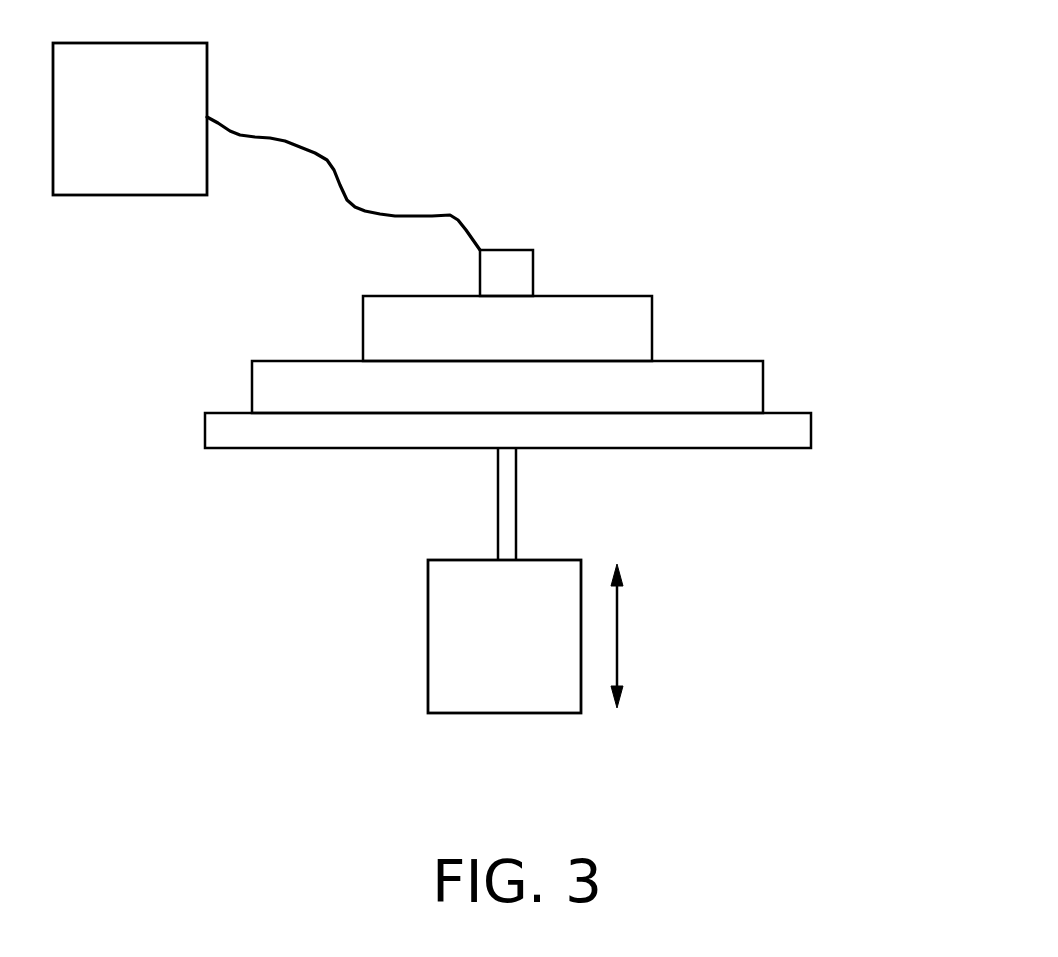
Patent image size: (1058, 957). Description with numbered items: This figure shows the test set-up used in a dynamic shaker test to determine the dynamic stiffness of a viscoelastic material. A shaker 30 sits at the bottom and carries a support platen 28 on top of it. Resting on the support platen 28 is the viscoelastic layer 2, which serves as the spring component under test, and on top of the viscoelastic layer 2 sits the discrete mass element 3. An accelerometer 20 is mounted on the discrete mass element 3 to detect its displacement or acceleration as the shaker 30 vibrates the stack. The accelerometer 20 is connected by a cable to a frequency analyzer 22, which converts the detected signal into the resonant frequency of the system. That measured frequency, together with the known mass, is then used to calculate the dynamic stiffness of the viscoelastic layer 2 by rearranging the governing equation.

The frequency analyzer 22 is at (145, 144).
The accelerometer 20 is at (525, 245).
The discrete mass element 3 is at (637, 292).
The viscoelastic layer 2 is at (740, 357).
The support platen 28 is at (803, 407).
The shaker 30 is at (523, 660).